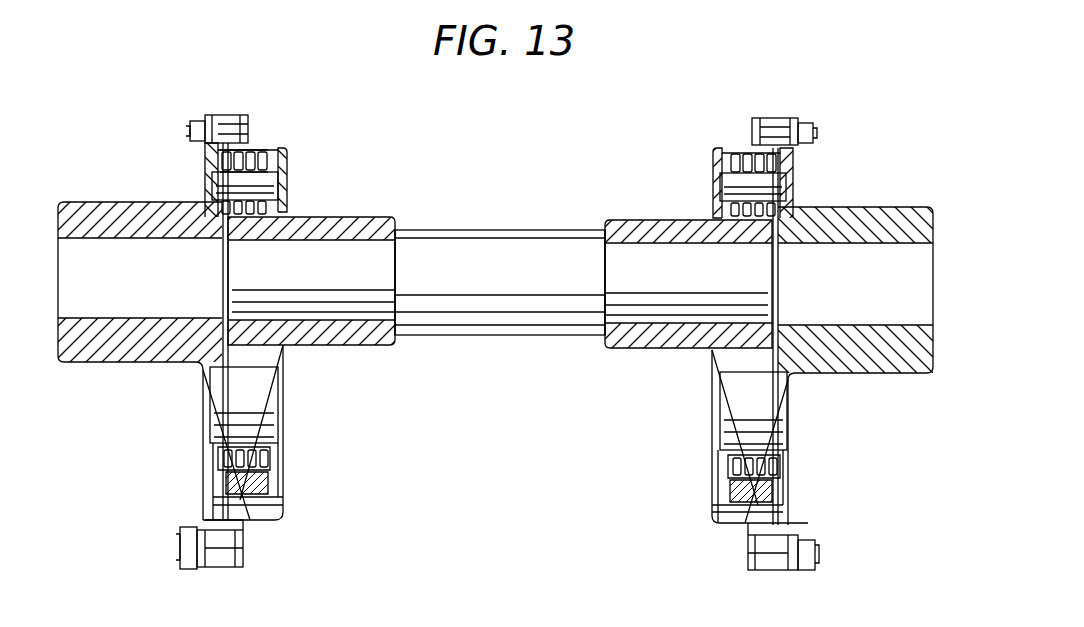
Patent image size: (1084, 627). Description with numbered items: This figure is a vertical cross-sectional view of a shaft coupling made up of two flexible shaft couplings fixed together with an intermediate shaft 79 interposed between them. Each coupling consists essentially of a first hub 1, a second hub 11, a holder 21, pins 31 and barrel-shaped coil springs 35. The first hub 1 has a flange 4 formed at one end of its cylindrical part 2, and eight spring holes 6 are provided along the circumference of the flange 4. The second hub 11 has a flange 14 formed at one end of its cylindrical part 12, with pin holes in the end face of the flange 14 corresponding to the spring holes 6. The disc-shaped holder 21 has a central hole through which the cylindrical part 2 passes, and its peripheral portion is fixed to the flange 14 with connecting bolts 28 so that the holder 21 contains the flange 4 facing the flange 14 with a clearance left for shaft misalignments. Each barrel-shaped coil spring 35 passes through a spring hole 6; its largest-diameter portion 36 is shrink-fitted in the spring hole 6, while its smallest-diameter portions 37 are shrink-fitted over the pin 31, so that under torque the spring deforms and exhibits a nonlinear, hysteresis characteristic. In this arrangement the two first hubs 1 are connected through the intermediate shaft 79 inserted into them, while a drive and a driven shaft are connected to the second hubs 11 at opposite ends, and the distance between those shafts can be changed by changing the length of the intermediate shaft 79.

The first hub 1 is at (359, 218).
The cylindrical part 2 is at (383, 222).
The flange 4 is at (248, 150).
The spring holes 6 is at (285, 404).
The second hub 11 is at (139, 203).
The cylindrical part 12 is at (97, 207).
The flange 14 is at (204, 153).
The holder 21 is at (288, 152).
The connecting bolts 28 is at (222, 115).
The pins 31 is at (280, 186).
The barrel-shaped coil spring 35 is at (270, 146).
The largest-diameter portion 36 is at (250, 532).
The smallest-diameter portions 37 is at (285, 470).
The intermediate shaft 79 is at (483, 236).